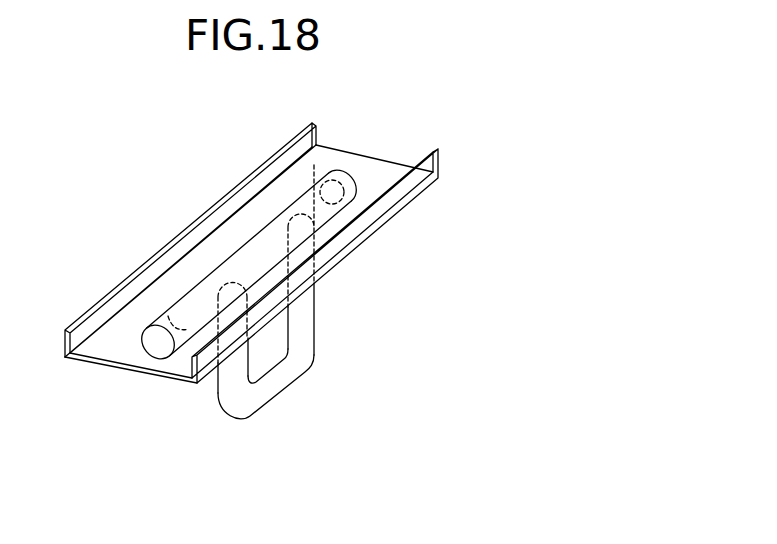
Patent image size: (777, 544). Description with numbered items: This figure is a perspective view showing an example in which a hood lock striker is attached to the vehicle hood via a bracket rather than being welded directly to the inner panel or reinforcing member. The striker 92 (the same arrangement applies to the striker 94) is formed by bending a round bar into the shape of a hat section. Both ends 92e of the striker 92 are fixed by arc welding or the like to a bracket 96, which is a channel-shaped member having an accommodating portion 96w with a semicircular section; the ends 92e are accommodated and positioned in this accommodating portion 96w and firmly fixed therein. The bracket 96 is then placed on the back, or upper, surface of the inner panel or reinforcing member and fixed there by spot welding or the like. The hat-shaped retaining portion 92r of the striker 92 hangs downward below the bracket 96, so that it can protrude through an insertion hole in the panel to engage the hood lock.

The bracket 96 is at (243, 230).
The accommodating portion 96w is at (303, 220).
The hood lock striker 92 is at (262, 292).
The hood lock striker 94 is at (262, 292).
The end of striker 92e is at (315, 165).
The retaining portion 92r is at (280, 382).